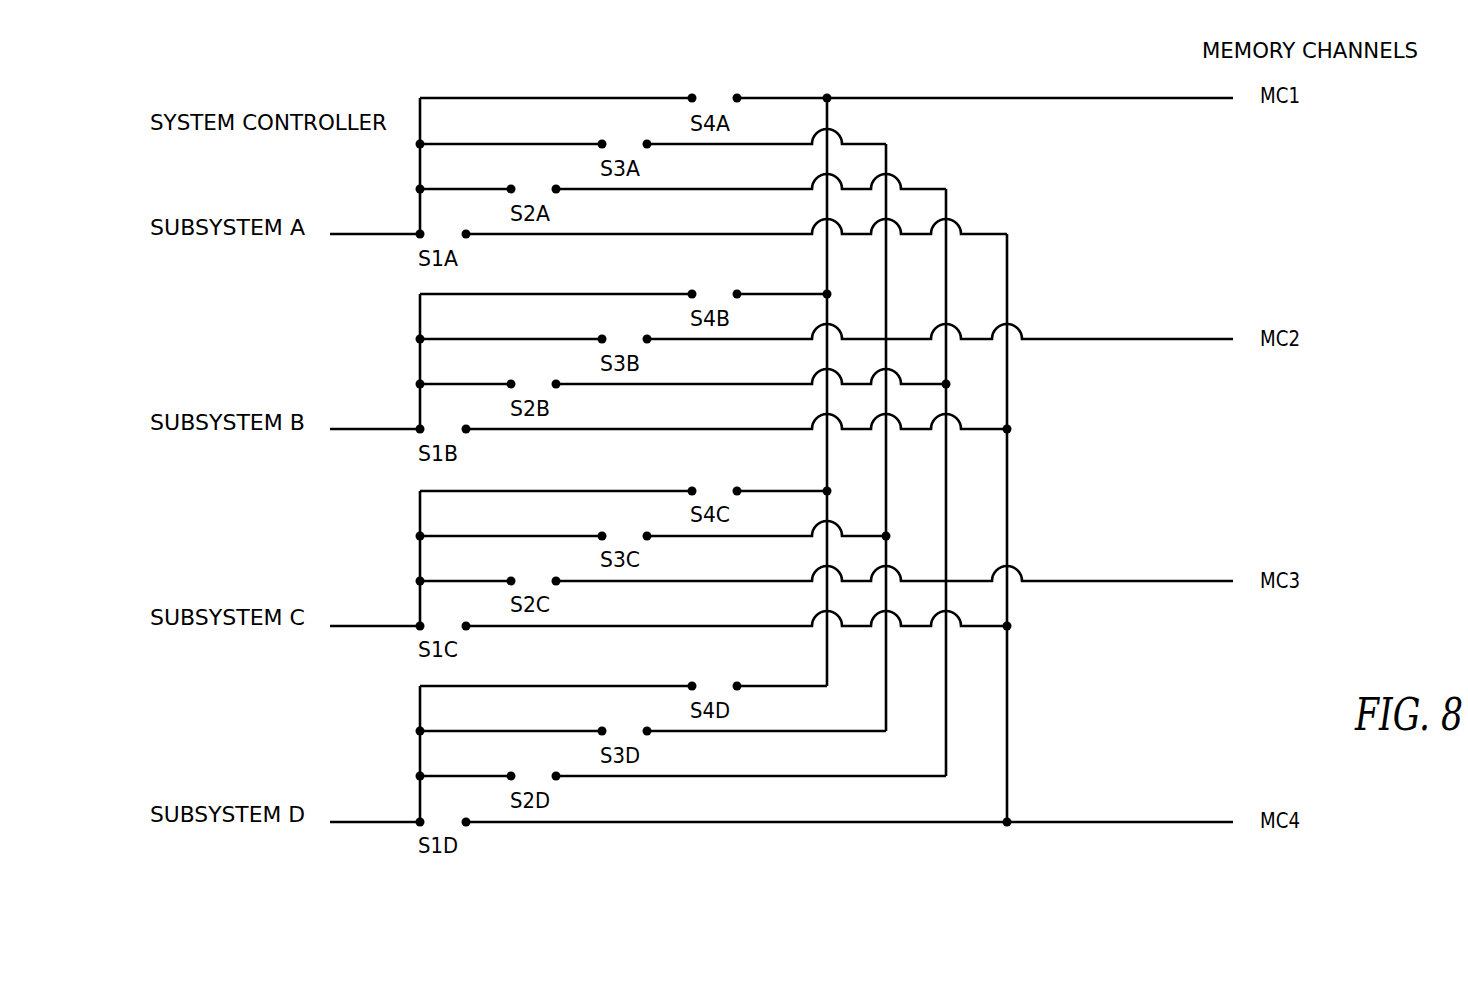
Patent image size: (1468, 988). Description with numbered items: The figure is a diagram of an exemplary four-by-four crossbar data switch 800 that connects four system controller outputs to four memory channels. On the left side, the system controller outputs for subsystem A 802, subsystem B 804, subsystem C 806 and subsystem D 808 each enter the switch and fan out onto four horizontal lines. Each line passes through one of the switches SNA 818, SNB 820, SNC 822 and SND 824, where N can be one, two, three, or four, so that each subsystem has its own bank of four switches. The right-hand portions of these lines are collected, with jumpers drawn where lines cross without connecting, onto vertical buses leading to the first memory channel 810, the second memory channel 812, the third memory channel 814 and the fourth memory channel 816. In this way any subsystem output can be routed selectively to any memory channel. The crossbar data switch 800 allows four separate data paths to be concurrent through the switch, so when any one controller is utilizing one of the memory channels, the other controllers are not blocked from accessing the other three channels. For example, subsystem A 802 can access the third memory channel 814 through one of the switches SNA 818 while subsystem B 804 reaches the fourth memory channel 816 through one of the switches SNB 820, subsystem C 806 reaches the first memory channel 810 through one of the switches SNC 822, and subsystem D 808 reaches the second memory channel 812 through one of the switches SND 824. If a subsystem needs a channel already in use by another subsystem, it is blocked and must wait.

The crossbar data switch 800 is at (786, 34).
The subsystem A 802 is at (385, 236).
The subsystem B 804 is at (385, 431).
The subsystem C 806 is at (385, 628).
The subsystem D 808 is at (385, 824).
The memory channel MC1 810 is at (1126, 98).
The memory channel MC2 812 is at (1126, 339).
The memory channel MC3 814 is at (1126, 581).
The memory channel MC4 816 is at (1126, 822).
The switches SNA 818 is at (560, 98).
The switches SNB 820 is at (560, 294).
The switches SNC 822 is at (560, 491).
The switches SND 824 is at (560, 686).